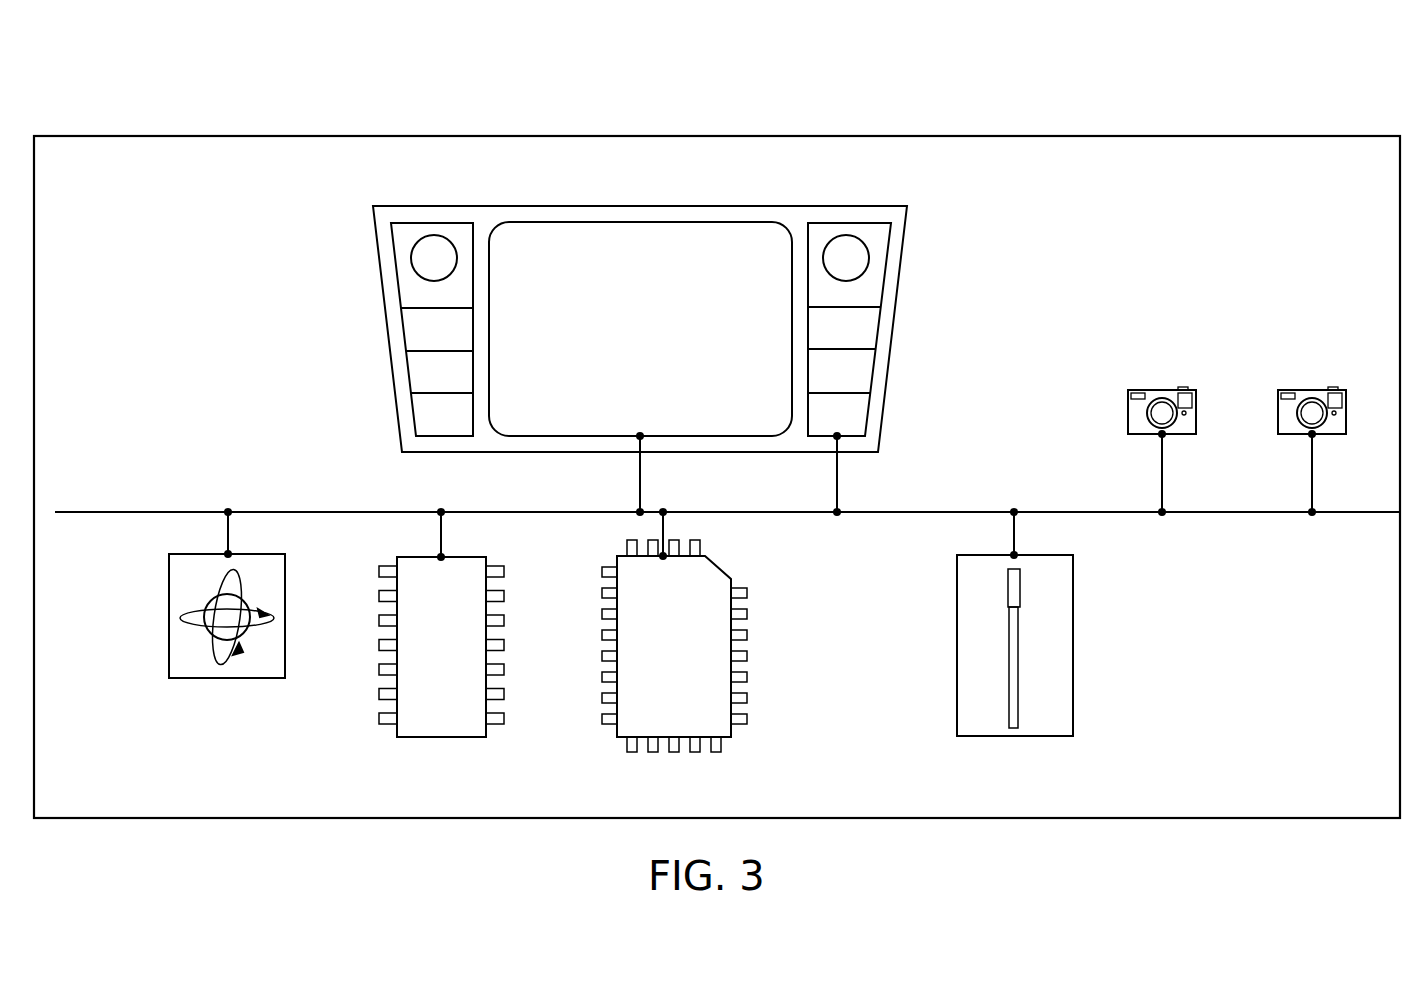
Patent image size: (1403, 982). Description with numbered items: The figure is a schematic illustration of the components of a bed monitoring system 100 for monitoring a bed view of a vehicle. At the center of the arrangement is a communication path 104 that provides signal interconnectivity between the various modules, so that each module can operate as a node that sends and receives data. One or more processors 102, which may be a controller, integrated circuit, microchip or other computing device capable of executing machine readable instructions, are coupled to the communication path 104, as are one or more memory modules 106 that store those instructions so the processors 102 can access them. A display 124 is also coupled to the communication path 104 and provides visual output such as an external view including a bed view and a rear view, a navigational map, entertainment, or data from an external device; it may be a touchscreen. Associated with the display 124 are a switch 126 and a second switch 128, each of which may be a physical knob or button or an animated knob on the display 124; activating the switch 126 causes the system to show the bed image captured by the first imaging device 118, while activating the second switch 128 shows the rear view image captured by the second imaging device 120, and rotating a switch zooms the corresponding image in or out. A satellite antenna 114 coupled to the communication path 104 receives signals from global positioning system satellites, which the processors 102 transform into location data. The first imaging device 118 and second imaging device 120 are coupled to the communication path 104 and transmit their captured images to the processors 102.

The bed monitoring system 100 is at (717, 426).
The processors 102 is at (620, 737).
The communication path 104 is at (113, 511).
The memory modules 106 is at (441, 737).
The satellite antenna 114 is at (226, 678).
The first imaging device 118 is at (1160, 390).
The second imaging device 120 is at (1310, 390).
The display 124 is at (627, 248).
The switch 126 is at (447, 262).
The second switch 128 is at (833, 258).